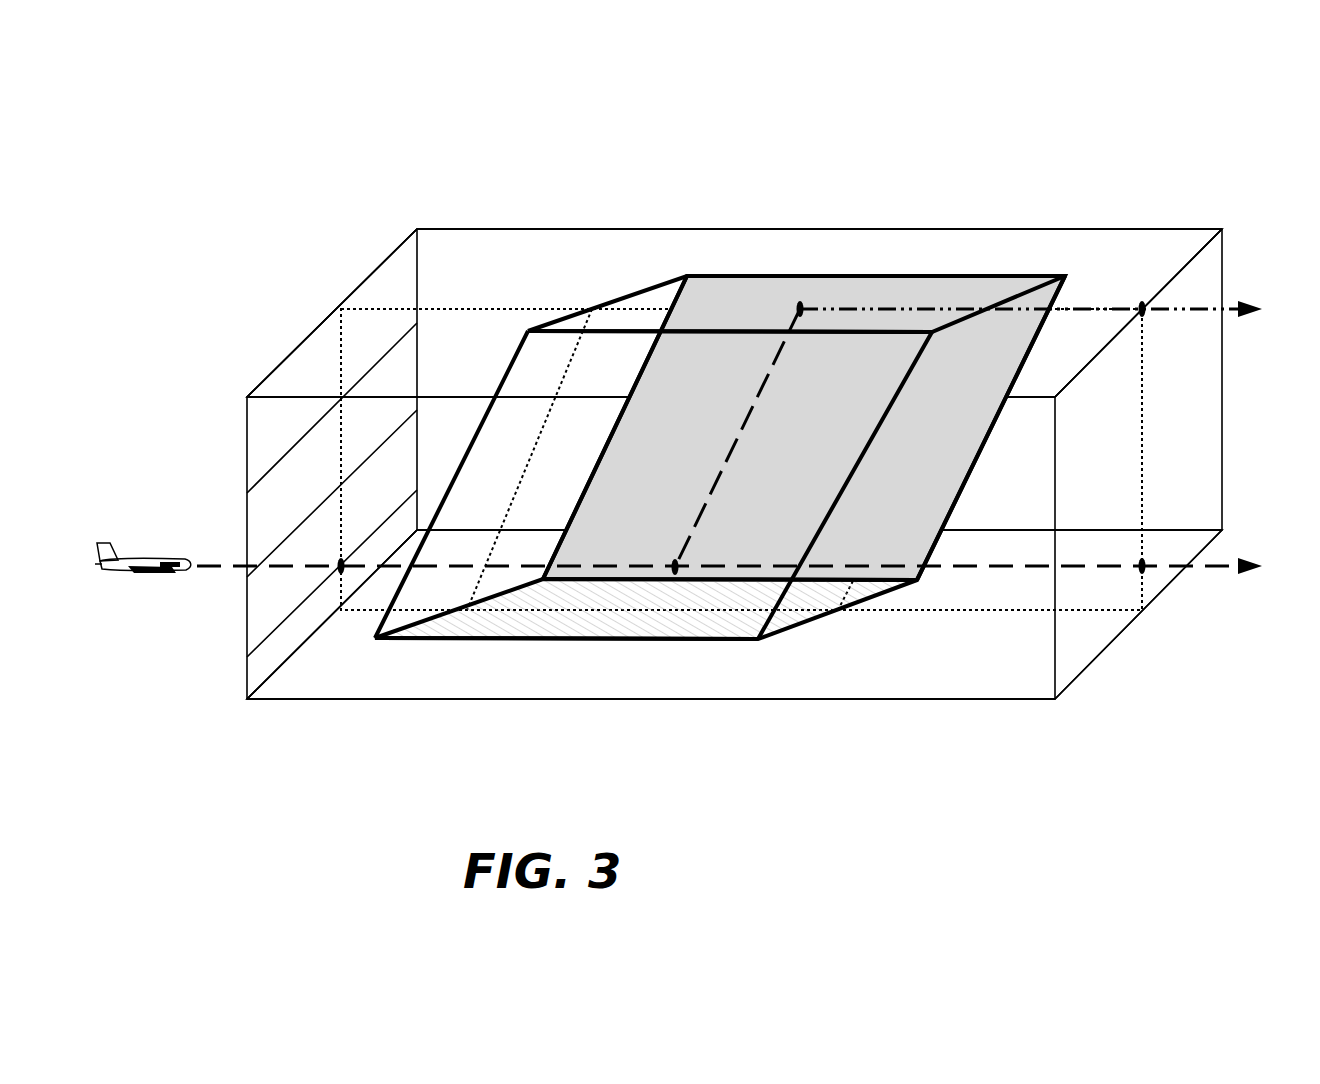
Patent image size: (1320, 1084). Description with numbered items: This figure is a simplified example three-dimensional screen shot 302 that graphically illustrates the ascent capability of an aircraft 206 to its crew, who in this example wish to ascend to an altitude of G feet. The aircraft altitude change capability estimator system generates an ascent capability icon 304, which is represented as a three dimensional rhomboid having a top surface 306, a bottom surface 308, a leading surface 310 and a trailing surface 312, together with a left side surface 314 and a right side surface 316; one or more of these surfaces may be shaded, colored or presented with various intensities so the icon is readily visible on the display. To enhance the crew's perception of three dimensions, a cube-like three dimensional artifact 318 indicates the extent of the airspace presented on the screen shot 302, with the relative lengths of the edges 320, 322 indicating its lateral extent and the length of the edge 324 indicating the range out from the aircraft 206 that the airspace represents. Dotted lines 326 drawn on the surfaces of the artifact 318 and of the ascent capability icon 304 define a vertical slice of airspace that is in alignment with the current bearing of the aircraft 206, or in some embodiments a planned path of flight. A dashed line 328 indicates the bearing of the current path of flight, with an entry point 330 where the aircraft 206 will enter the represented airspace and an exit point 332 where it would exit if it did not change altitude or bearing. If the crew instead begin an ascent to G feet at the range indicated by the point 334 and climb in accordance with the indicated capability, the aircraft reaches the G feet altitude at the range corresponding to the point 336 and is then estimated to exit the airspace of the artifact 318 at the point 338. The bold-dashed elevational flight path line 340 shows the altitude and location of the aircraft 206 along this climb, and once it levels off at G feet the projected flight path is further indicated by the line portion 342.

The aircraft 206 is at (155, 585).
The three-dimensional screen shot 302 is at (940, 762).
The ascent capability icon 304 is at (740, 435).
The top surface 306 is at (858, 287).
The bottom surface 308 is at (673, 617).
The leading surface 310 is at (497, 350).
The trailing surface 312 is at (940, 487).
The left side surface 314 is at (1017, 262).
The right side surface 316 is at (500, 648).
The three dimensional artifact 318 is at (752, 218).
The edge 320 is at (1082, 673).
The edge 322 is at (387, 258).
The edge 324 is at (288, 397).
The dotted lines 326 is at (465, 308).
The dashed line 328 is at (203, 565).
The entry point 330 is at (343, 560).
The exit point 332 is at (1140, 572).
The point 334 is at (675, 562).
The point 336 is at (800, 305).
The point 338 is at (1147, 313).
The elevational flight path line 340 is at (745, 430).
The line portion 342 is at (1110, 307).